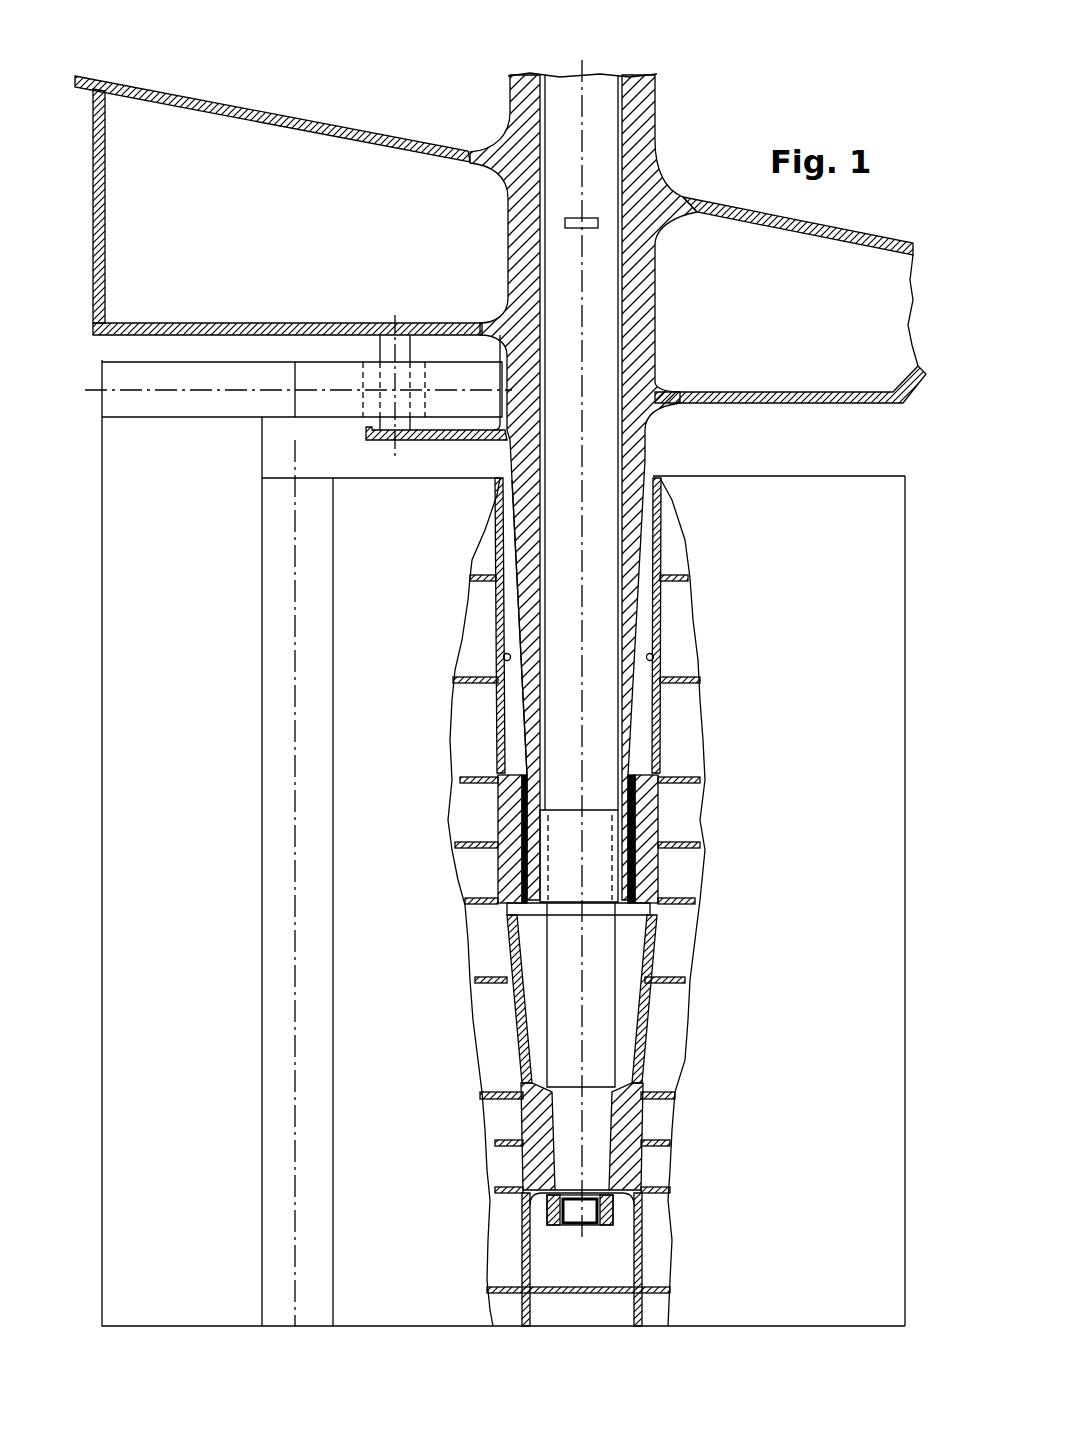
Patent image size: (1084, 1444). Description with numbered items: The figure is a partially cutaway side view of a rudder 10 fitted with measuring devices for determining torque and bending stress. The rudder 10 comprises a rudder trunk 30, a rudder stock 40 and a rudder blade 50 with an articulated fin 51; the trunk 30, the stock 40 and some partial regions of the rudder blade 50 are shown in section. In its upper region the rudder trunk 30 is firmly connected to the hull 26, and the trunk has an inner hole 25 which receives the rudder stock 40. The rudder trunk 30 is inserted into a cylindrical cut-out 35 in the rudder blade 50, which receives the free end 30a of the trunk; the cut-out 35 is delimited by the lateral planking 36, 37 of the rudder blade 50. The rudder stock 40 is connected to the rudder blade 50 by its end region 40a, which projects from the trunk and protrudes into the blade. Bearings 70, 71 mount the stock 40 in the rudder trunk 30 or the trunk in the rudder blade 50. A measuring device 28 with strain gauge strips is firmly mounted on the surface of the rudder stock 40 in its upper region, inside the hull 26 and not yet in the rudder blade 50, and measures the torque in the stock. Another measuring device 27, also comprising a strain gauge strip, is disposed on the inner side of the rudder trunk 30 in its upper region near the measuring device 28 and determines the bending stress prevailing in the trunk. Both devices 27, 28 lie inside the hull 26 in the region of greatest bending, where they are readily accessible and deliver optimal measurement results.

The rudder 10 is at (353, 127).
The inner hole 25 is at (505, 455).
The hull 26 is at (253, 113).
The measuring device 27 is at (675, 196).
The measuring device 28 is at (565, 222).
The rudder trunk 30 is at (651, 137).
The free end 30a is at (525, 738).
The cylindrical cut-out 35 is at (655, 630).
The lateral planking 36 is at (503, 657).
The lateral planking 37 is at (655, 657).
The rudder stock 40 is at (595, 448).
The end region 40a is at (597, 1022).
The rudder blade 50 is at (800, 1182).
The articulated fin 51 is at (182, 1038).
The bearing 70 is at (620, 912).
The bearing 71 is at (655, 808).